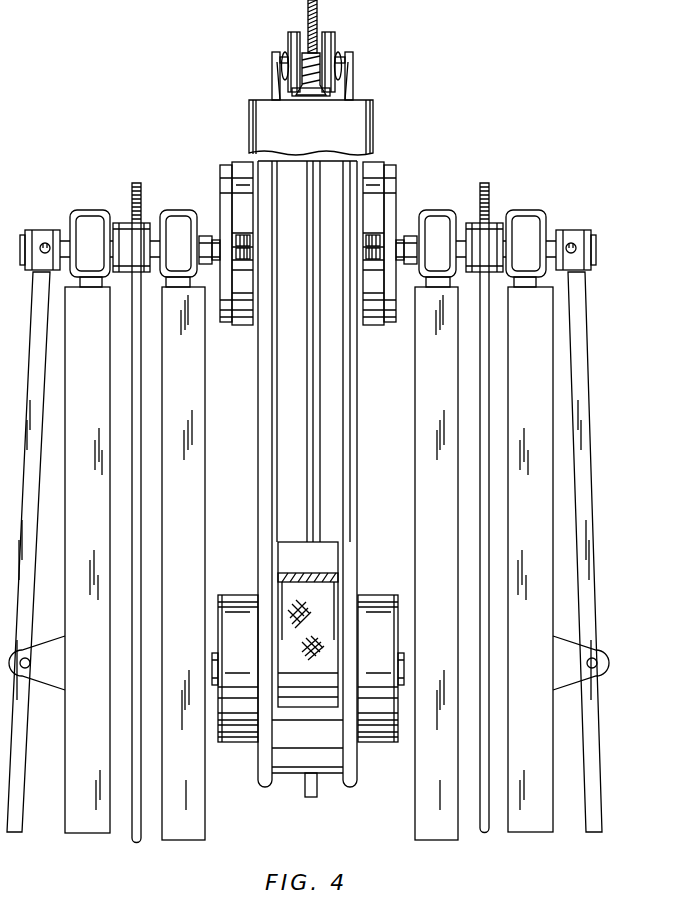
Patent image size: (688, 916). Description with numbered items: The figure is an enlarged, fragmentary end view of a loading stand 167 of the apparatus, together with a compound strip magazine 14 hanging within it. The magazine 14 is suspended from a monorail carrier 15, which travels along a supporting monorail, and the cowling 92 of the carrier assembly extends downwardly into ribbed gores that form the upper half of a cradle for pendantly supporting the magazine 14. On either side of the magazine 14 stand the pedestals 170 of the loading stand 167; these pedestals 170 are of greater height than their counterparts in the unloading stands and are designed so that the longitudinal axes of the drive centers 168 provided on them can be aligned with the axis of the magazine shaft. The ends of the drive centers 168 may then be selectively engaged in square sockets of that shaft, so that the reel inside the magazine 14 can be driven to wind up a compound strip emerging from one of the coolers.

The compound strip magazine 14 is at (360, 474).
The monorail carrier 15 is at (375, 134).
The cowling 92 is at (249, 131).
The loading stand 167 is at (568, 156).
The drive center 168 is at (214, 236).
The pedestal 170 is at (205, 381).